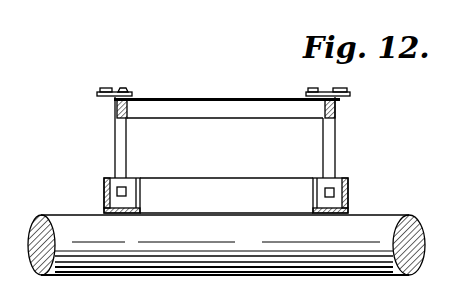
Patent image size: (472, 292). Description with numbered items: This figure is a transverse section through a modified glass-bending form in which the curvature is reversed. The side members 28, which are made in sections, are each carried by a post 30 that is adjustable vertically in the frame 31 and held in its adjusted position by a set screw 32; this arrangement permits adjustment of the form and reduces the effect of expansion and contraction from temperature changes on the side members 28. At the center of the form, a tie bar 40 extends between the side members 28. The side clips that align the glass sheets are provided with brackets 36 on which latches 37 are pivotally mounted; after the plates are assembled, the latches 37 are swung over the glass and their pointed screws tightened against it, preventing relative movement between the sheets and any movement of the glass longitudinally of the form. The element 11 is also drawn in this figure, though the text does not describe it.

The top plate 11 is at (228, 98).
The spacer block 28 is at (327, 104).
The left upright 30 is at (127, 148).
The base plate 31 is at (243, 196).
The mounting boss 32 is at (338, 193).
The right upright 36 is at (336, 108).
The clip fastener 37 is at (320, 92).
The lower plate 40 is at (230, 119).